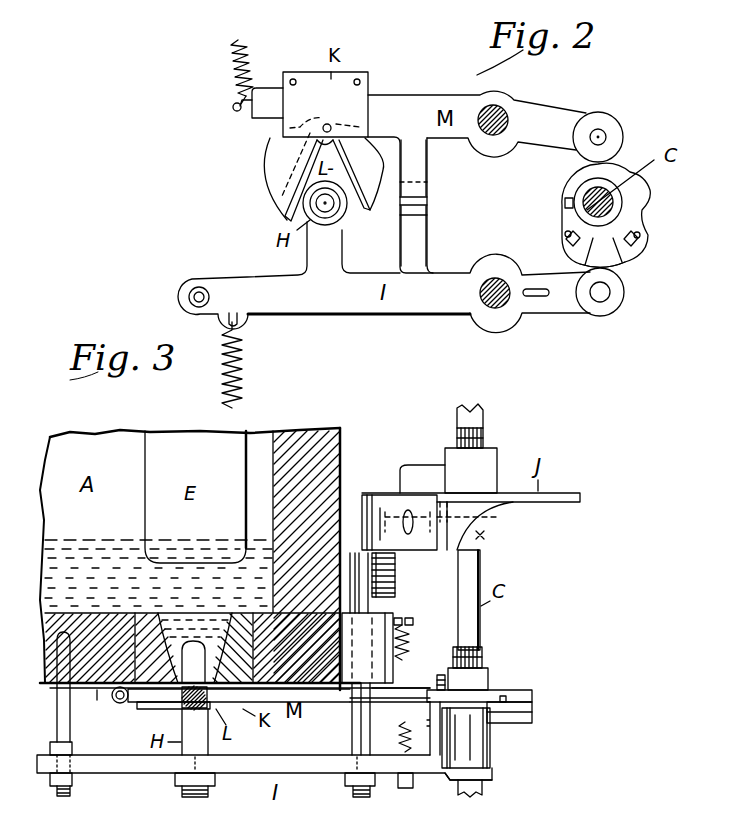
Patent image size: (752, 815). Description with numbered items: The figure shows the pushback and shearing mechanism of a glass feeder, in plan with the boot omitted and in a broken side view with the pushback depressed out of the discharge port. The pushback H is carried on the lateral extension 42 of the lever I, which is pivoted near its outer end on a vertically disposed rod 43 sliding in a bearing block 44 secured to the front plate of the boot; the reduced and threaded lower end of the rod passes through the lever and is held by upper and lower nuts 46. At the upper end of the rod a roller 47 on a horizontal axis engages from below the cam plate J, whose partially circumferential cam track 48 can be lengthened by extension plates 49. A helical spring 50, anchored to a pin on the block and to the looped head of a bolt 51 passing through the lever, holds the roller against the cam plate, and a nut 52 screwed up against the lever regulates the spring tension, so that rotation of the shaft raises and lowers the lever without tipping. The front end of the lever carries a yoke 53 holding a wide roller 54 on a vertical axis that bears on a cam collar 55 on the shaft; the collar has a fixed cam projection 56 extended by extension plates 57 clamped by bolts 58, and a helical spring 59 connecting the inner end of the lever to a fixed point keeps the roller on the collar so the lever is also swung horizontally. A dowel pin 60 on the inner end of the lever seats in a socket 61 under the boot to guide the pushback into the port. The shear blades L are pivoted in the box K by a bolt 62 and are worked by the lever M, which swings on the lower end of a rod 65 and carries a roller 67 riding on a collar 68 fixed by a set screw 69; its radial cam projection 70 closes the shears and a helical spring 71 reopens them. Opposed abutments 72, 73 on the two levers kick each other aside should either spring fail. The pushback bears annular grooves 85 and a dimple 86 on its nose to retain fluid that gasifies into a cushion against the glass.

In FIG. 2, the lateral extension 42 is at (311, 259).
In FIG. 2, the rod 43 is at (495, 310).
In FIG. 3, the rod 43 is at (351, 713).
In FIG. 3, the bearing block 44 is at (367, 648).
In FIG. 3, the nuts 46 is at (343, 757).
In FIG. 3, the roller 47 is at (397, 588).
In FIG. 3, the cam track 48 is at (372, 495).
In FIG. 3, the extension plates 49 is at (489, 527).
In FIG. 3, the helical spring 50 is at (412, 657).
In FIG. 3, the bolt 51 is at (399, 740).
In FIG. 3, the nut 52 is at (414, 788).
In FIG. 3, the yoke 53 is at (493, 779).
In FIG. 2, the wide roller 54 is at (627, 297).
In FIG. 3, the wide roller 54 is at (492, 751).
In FIG. 3, the cam collar 55 is at (535, 713).
In FIG. 2, the cam projection 56 is at (632, 268).
In FIG. 2, the extension plates 57 is at (603, 251).
In FIG. 3, the extension plates 57 is at (535, 697).
In FIG. 2, the bolts 58 is at (560, 241).
In FIG. 2, the helical spring 59 is at (245, 372).
In FIG. 2, the dowel pin 60 is at (200, 289).
In FIG. 3, the dowel pin 60 is at (73, 728).
In FIG. 3, the socket 61 is at (50, 690).
In FIG. 2, the bolt 62 is at (334, 127).
In FIG. 2, the rod 65 is at (507, 105).
In FIG. 2, the roller 67 is at (624, 139).
In FIG. 3, the roller 67 is at (428, 675).
In FIG. 2, the collar 68 is at (574, 182).
In FIG. 3, the collar 68 is at (488, 668).
In FIG. 2, the set screw 69 is at (565, 204).
In FIG. 2, the radial cam projection 70 is at (650, 191).
In FIG. 2, the helical spring 71 is at (232, 65).
In FIG. 2, the abutment 72 is at (428, 234).
In FIG. 2, the abutment 73 is at (428, 181).
In FIG. 2, the annular grooves 85 is at (345, 212).
In FIG. 3, the dimple 86 is at (181, 706).